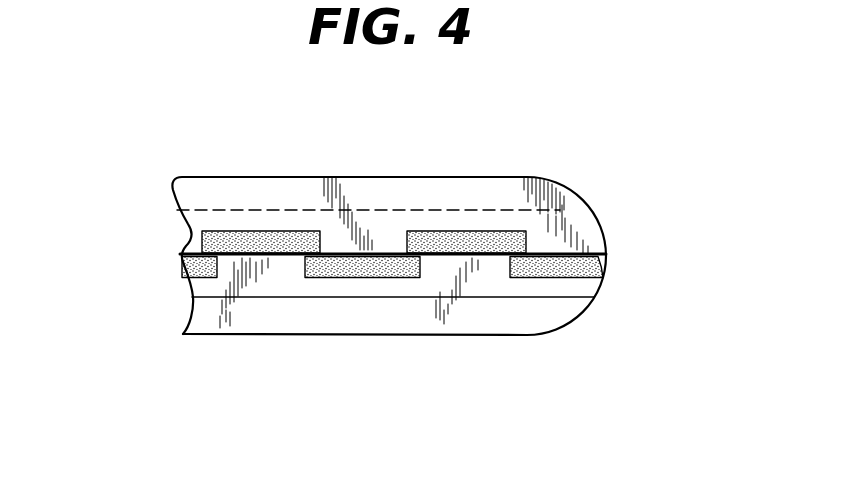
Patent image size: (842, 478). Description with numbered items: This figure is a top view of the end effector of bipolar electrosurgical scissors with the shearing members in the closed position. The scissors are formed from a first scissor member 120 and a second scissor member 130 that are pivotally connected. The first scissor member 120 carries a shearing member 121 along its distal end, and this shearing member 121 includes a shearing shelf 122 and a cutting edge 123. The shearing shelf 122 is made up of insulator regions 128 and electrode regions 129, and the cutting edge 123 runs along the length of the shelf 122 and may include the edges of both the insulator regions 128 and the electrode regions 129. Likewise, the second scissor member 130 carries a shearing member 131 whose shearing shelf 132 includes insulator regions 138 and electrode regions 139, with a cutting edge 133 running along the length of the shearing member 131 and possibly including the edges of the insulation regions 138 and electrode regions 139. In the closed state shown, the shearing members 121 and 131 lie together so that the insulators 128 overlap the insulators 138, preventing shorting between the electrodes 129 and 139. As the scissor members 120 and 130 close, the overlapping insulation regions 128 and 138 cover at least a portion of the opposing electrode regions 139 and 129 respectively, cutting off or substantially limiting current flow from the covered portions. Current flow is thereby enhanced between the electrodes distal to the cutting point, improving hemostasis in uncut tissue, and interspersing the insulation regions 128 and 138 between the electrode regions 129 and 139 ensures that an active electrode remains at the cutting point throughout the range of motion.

The first scissor member 120 is at (192, 308).
The shearing member 121 is at (282, 322).
The shearing shelf 122 is at (345, 293).
The cutting edge 123 is at (588, 240).
The insulator regions 128 is at (186, 262).
The electrode regions 129 is at (243, 265).
The second scissor member 130 is at (180, 216).
The shearing member 131 is at (223, 198).
The shearing shelf 132 is at (540, 227).
The cutting edge 133 is at (603, 262).
The insulator regions 138 is at (240, 242).
The electrode regions 139 is at (340, 237).